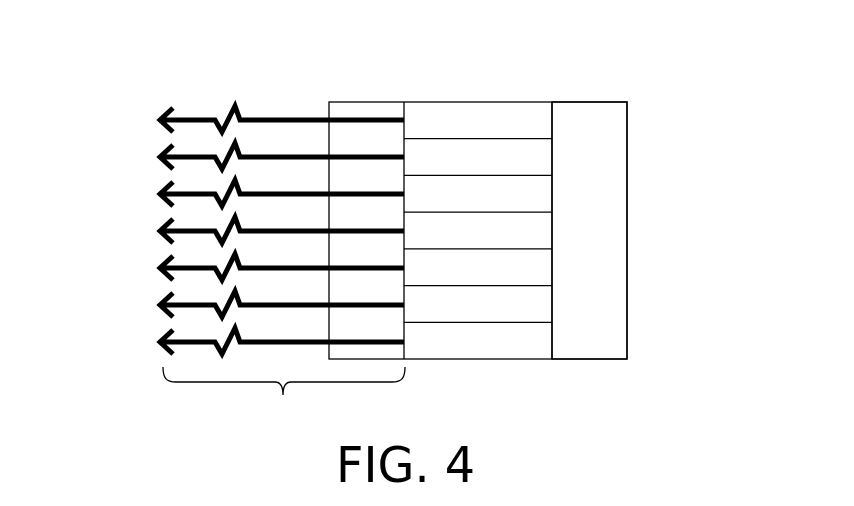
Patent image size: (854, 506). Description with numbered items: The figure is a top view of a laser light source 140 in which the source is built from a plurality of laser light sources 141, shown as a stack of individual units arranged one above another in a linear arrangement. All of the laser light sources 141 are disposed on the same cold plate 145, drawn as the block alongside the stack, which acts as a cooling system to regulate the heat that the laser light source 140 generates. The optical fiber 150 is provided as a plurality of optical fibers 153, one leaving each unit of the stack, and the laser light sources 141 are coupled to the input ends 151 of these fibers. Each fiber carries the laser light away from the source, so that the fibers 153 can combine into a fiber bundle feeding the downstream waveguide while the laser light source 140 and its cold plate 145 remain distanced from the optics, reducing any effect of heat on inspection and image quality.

The laser light source 140 is at (655, 63).
The plurality of laser light sources 141 is at (478, 230).
The cold plate 145 is at (627, 268).
The optical fiber 150 is at (235, 185).
The input end 151 is at (386, 112).
The plurality of optical fibers 153 is at (284, 394).